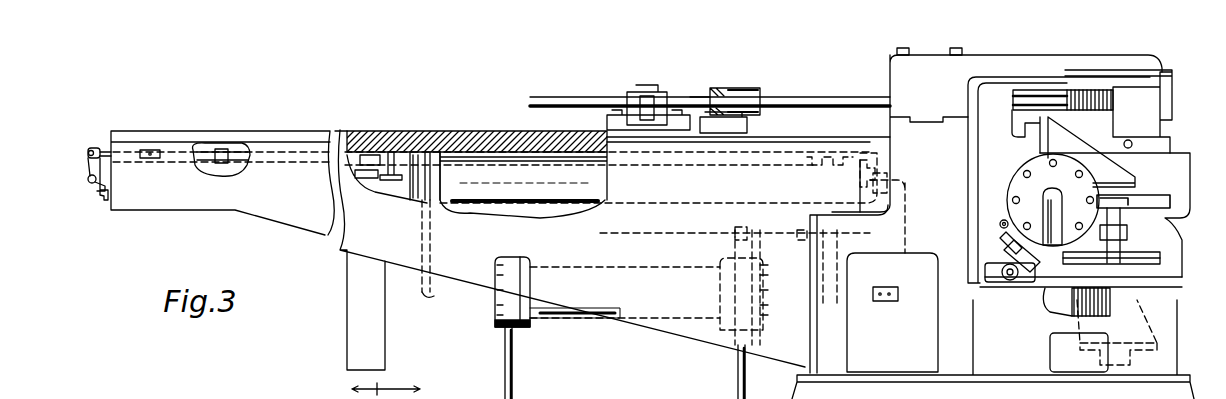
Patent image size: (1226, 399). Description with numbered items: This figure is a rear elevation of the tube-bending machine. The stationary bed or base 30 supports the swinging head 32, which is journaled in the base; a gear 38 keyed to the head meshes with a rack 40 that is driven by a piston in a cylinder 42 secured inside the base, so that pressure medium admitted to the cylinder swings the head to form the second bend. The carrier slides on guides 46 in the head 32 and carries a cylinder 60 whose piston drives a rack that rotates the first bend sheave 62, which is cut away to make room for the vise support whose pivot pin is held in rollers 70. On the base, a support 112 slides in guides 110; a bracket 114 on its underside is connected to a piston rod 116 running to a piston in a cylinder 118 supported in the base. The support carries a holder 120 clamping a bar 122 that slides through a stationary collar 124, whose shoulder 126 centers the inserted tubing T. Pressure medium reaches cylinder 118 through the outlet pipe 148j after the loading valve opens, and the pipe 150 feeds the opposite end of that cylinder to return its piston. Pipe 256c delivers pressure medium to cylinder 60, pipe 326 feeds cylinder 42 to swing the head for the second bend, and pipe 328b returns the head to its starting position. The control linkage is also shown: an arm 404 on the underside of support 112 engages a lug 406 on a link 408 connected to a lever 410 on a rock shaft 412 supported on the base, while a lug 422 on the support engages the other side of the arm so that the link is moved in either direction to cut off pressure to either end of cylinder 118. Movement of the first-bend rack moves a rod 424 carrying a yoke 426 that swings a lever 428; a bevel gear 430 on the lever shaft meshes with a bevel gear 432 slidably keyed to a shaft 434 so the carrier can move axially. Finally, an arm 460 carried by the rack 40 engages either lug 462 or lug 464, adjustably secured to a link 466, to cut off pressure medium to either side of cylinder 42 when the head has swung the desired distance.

The stationary bed or base 30 is at (278, 140).
The swinging head 32 is at (992, 82).
The gear 38 is at (1070, 308).
The rack 40 is at (1055, 292).
The cylinder 42 is at (545, 316).
The guides 46 is at (1032, 122).
The cylinder 60 is at (1010, 176).
The first bend sheave 62 is at (1080, 90).
The rollers 70 is at (369, 391).
The guides 110 is at (773, 140).
The support 112 is at (447, 140).
The bracket 114 is at (393, 192).
The piston rod 116 is at (413, 205).
The cylinder 118 is at (497, 170).
The holder 120 is at (650, 92).
The bar 122 is at (694, 97).
The stationary collar 124 is at (716, 88).
The shoulder 126 is at (738, 88).
The outlet pipe 148j is at (430, 296).
The pipe 150 is at (905, 301).
The pipe 256c is at (1122, 236).
The pipe 326 is at (503, 357).
The pipe 328b is at (735, 366).
The arm 404 is at (370, 155).
The lug 406 is at (388, 153).
The link 408 is at (205, 146).
The lever 410 is at (84, 167).
The rock shaft 412 is at (90, 186).
The lug 422 is at (836, 160).
The rod 424 is at (1001, 220).
The yoke 426 is at (1003, 231).
The lever 428 is at (1012, 243).
The bevel gear 430 is at (1000, 270).
The bevel gear 432 is at (1003, 282).
The shaft 434 is at (1008, 282).
The arm 460 is at (850, 278).
The lug 462 is at (826, 203).
The lug 464 is at (875, 235).
The link 466 is at (735, 233).
The tubing T is at (838, 97).